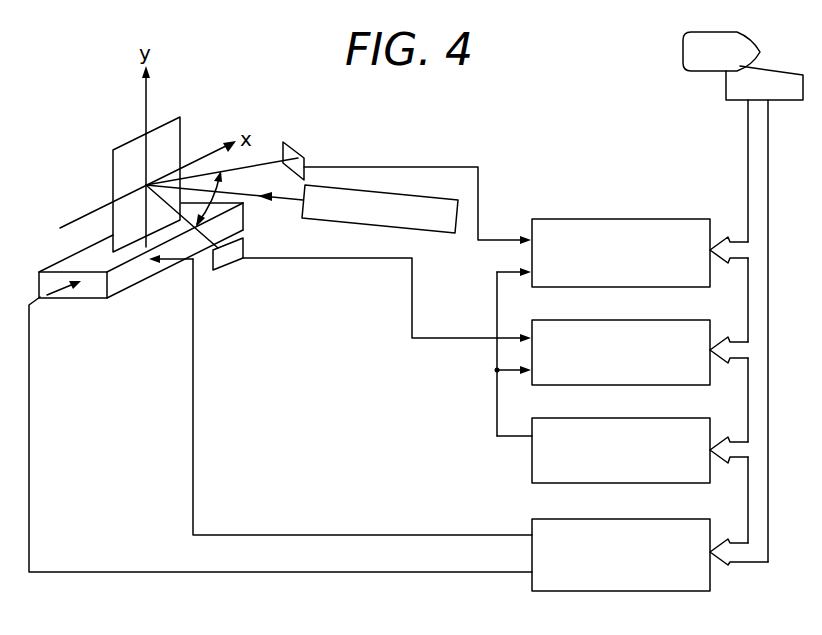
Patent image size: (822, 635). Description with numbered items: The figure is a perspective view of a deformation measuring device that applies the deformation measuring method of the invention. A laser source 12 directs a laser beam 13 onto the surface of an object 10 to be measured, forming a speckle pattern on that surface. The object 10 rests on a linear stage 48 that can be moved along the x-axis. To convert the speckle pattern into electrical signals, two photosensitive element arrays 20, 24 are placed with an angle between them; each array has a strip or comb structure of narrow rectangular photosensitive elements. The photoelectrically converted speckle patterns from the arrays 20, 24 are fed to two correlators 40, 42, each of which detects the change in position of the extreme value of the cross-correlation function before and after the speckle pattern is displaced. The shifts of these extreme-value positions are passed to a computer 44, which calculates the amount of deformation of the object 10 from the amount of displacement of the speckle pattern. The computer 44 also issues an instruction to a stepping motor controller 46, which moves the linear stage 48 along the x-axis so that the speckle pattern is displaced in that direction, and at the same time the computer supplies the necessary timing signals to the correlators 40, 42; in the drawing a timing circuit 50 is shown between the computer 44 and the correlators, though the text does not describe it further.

The object 10 is at (124, 143).
The laser source 12 is at (418, 196).
The laser beam 13 is at (284, 203).
The photosensitive element array 20 is at (296, 147).
The photosensitive element array 24 is at (222, 271).
The correlator 40 is at (668, 219).
The correlator 42 is at (668, 320).
The computer 44 is at (683, 48).
The stepping motor controller 46 is at (665, 519).
The linear stage 48 is at (143, 284).
The timing circuit 50 is at (665, 418).